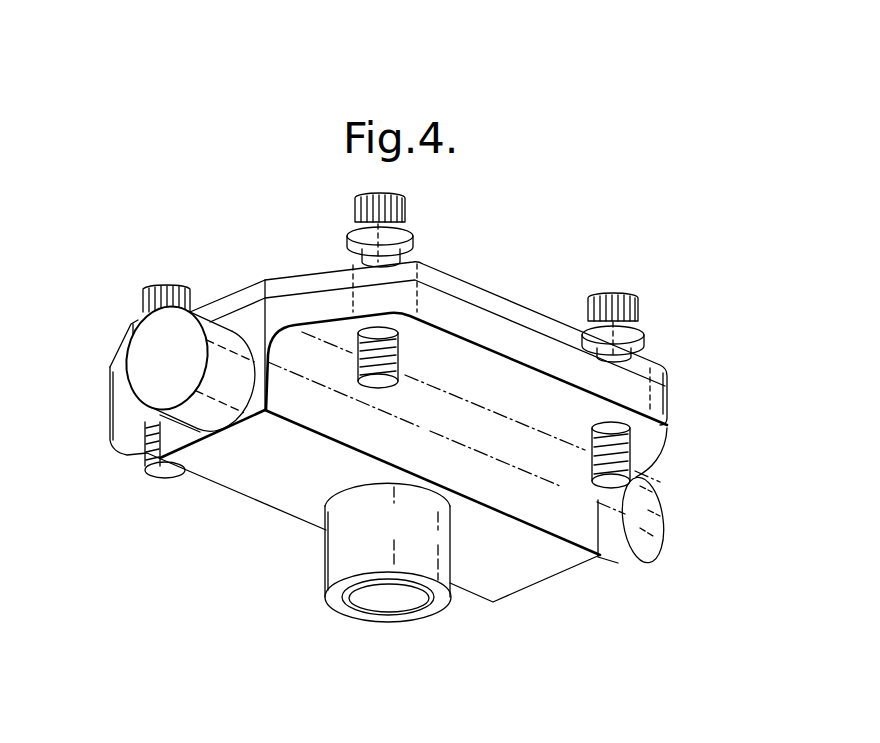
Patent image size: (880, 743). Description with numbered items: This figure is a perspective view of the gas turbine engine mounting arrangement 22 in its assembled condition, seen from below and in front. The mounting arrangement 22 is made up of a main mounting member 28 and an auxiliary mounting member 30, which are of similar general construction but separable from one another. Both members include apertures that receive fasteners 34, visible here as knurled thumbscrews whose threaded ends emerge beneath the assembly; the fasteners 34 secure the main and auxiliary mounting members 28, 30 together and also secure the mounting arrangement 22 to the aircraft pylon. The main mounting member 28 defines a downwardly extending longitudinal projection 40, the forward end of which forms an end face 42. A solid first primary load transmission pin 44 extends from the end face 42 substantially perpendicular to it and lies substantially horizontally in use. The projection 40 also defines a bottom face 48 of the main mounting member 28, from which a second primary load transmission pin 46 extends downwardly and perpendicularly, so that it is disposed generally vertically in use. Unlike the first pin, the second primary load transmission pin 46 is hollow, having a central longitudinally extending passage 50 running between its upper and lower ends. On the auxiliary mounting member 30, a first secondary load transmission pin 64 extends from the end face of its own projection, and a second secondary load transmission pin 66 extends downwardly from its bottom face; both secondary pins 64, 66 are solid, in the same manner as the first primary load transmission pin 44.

The mounting arrangement 22 is at (574, 224).
The main mounting member 28 is at (551, 417).
The auxiliary mounting member 30 is at (292, 281).
The fasteners 34 is at (406, 226).
The longitudinal projection 40 is at (261, 489).
The end face 42 is at (147, 450).
The first primary load transmission pin 44 is at (141, 360).
The second primary load transmission pin 46 is at (341, 553).
The bottom face 48 is at (481, 577).
The central longitudinally extending passage 50 is at (350, 612).
The first secondary load transmission pin 64 is at (652, 508).
The second secondary load transmission pin 66 is at (388, 606).